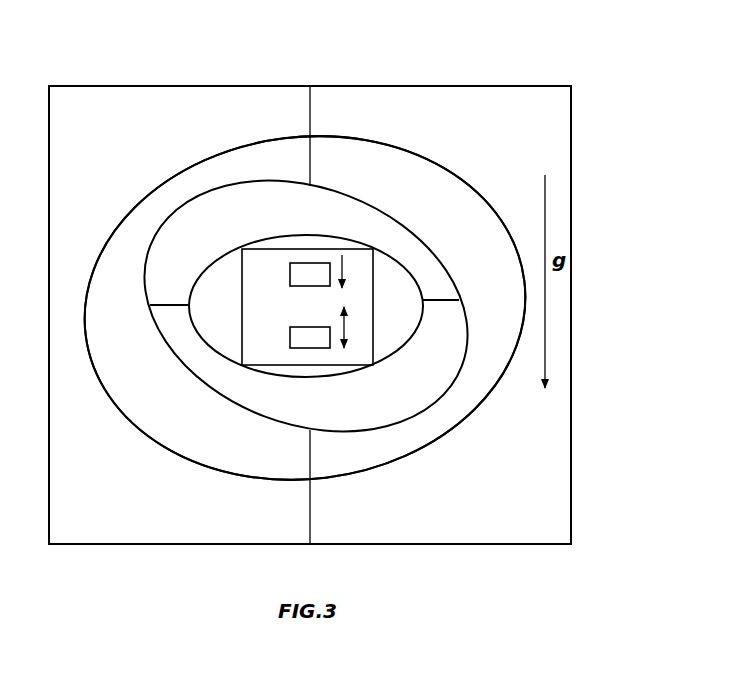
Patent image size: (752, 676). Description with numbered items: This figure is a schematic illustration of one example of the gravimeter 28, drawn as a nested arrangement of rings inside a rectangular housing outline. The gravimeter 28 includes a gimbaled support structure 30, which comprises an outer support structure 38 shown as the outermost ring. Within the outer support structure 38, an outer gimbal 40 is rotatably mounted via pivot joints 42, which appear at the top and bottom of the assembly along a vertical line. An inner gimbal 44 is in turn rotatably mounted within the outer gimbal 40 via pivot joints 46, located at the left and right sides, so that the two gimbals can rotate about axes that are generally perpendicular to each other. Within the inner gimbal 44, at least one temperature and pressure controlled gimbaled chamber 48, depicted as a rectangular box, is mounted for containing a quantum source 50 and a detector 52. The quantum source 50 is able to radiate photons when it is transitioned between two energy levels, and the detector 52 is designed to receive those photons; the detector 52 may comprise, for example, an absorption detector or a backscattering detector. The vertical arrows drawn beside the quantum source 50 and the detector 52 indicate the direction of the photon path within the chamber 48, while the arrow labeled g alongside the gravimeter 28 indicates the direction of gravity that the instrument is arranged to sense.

The gravimeter 28 is at (571, 140).
The gimbaled support structure 30 is at (437, 154).
The outer support structure 38 is at (165, 180).
The outer gimbal 40 is at (403, 228).
The pivot joints 42 is at (310, 150).
The inner gimbal 44 is at (347, 378).
The pivot joints 46 is at (162, 305).
The temperature and pressure controlled gimbaled chamber 48 is at (270, 367).
The quantum source 50 is at (278, 275).
The detector 52 is at (278, 337).